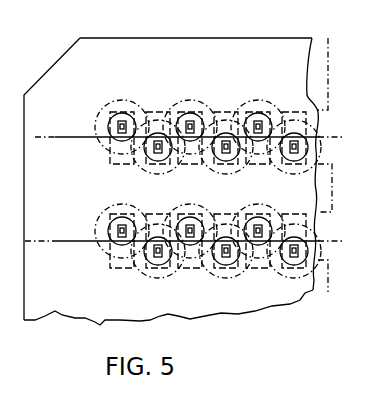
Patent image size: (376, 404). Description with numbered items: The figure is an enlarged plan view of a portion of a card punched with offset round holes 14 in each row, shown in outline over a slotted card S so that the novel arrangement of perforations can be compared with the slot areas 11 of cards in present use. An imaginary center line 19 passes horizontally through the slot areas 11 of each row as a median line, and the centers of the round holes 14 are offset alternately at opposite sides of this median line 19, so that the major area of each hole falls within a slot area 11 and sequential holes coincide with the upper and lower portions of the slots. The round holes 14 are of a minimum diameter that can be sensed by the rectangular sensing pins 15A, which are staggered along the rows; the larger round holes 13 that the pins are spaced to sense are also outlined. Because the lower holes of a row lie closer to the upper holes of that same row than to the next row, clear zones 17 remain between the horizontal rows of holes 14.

The slotted card S is at (330, 68).
The imaginary center line 19 is at (63, 133).
The slot areas 11 is at (160, 172).
The round holes 13 is at (103, 160).
The round holes 14 is at (108, 131).
The sensing pins 15A is at (158, 142).
The clear zones 17 is at (278, 186).